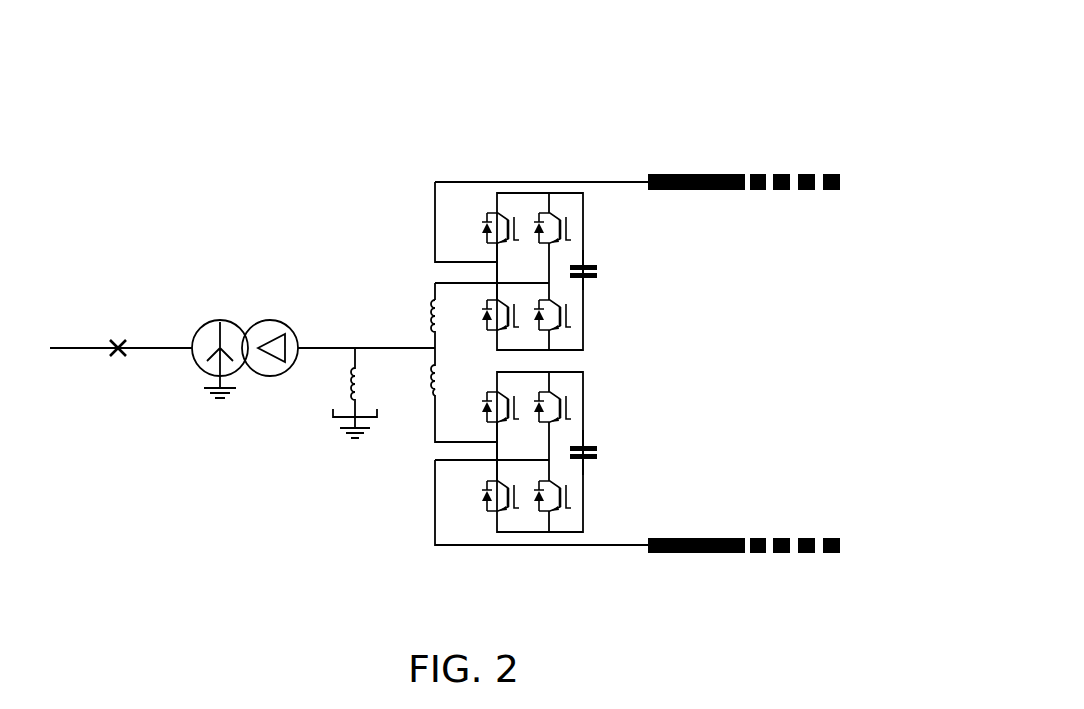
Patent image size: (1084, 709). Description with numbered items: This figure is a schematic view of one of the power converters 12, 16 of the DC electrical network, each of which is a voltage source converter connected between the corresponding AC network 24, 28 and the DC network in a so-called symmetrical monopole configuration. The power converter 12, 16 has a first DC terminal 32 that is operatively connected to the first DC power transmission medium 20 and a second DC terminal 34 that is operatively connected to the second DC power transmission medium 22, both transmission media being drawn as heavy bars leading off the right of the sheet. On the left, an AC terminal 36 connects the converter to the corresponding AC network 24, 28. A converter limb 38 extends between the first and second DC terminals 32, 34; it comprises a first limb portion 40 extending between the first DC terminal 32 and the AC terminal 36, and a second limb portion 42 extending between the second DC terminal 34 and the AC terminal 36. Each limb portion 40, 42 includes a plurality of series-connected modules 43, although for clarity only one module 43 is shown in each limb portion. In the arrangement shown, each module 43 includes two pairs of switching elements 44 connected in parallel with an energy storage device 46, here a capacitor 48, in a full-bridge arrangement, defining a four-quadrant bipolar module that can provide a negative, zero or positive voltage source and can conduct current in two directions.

The first power converter 12 is at (242, 216).
The third power converter 16 is at (232, 117).
The first DC power transmission medium 20 is at (697, 176).
The second DC power transmission medium 22 is at (700, 555).
The AC network 24 is at (232, 379).
The AC network 28 is at (196, 362).
The first DC terminal 32 is at (432, 182).
The second DC terminal 34 is at (435, 548).
The AC terminal 36 is at (432, 348).
The converter limb 38 is at (466, 107).
The first limb portion 40 is at (809, 259).
The second limb portion 42 is at (825, 428).
The module 43 is at (632, 311).
The switching elements 44 is at (486, 311).
The energy storage device 46 is at (650, 361).
The capacitor 48 is at (598, 273).